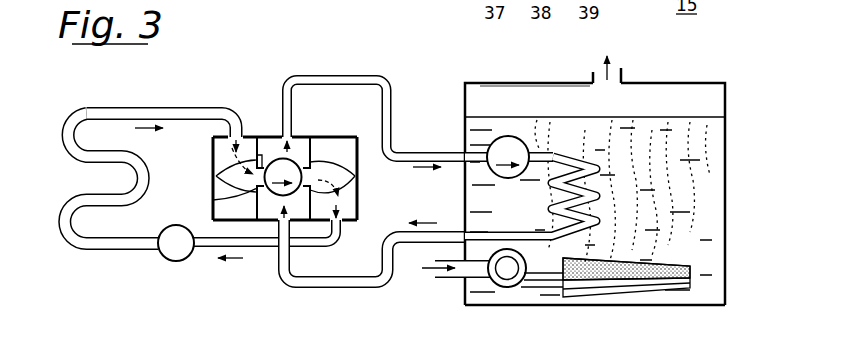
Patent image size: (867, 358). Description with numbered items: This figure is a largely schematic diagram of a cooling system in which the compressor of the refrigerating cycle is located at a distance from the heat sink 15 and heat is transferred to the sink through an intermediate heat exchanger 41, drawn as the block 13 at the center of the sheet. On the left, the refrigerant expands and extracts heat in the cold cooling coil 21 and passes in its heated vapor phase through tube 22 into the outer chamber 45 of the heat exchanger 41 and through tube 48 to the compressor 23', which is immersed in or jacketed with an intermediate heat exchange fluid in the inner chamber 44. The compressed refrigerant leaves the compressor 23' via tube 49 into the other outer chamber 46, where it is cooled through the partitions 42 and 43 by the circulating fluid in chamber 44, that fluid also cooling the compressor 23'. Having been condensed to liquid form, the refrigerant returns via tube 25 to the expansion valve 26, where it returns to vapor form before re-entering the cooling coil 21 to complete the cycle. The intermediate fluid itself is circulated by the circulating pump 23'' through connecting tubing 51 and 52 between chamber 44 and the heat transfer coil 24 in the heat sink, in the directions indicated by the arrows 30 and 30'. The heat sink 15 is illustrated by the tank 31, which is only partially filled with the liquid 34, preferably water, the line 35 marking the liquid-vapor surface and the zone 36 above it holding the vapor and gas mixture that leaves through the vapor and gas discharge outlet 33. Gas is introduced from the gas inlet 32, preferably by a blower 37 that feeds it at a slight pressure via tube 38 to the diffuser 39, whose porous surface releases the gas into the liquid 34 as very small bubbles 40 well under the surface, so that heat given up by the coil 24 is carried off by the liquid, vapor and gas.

The valve block 13 is at (258, 100).
The heat sink 15 is at (694, 337).
The cooling coil 21 is at (67, 166).
The tubing 22 is at (173, 106).
The compressor 23' is at (312, 166).
The circulating pump 23'' is at (496, 149).
The heat transfer coil 24 is at (550, 203).
The tubing 25 is at (267, 253).
The expansion valve 26 is at (180, 261).
The arrow 30 is at (421, 179).
The arrow 30' is at (421, 210).
The tank 31 is at (725, 212).
The gas inlet 32 is at (445, 278).
The vapor and gas discharge outlet 33 is at (593, 80).
The liquid 34 is at (718, 177).
The liquid-vapor surface line 35 is at (690, 117).
The vapor and gas zone 36 is at (653, 88).
The blower 37 is at (508, 290).
The tube 38 is at (552, 293).
The diffuser 39 is at (607, 290).
The bubbles 40 is at (693, 222).
The heat exchanger 41 is at (215, 197).
The partition 42 is at (236, 188).
The partition 43 is at (341, 186).
The inner chamber 44 is at (296, 142).
The outer chamber 45 is at (223, 152).
The outer chamber 46 is at (341, 162).
The tube 48 is at (260, 170).
The tube 49 is at (312, 186).
The connecting tubing 51 is at (326, 74).
The connecting tubing 52 is at (314, 288).